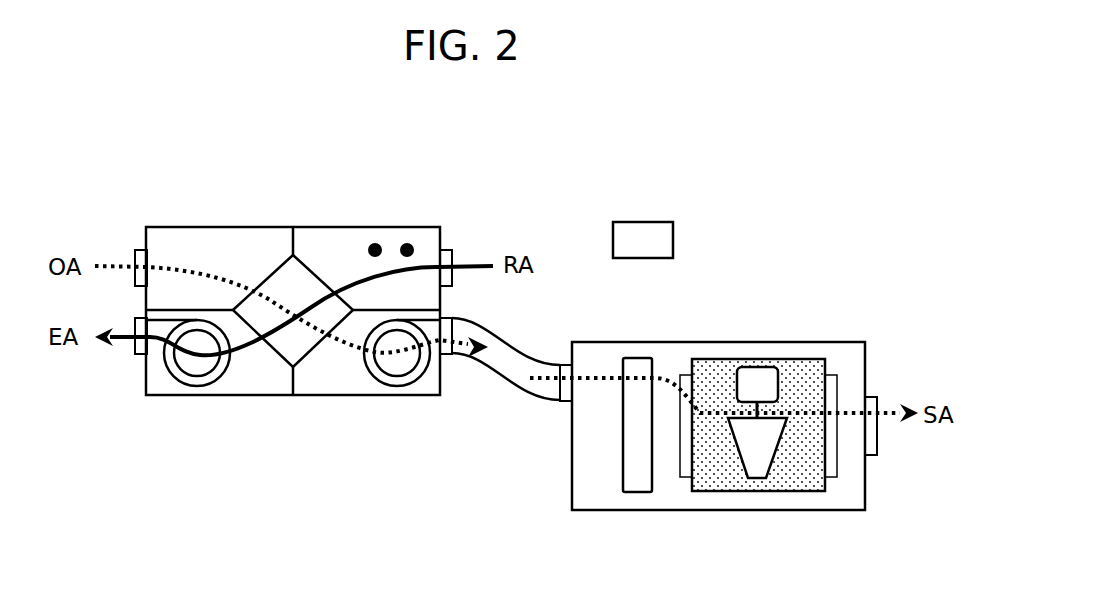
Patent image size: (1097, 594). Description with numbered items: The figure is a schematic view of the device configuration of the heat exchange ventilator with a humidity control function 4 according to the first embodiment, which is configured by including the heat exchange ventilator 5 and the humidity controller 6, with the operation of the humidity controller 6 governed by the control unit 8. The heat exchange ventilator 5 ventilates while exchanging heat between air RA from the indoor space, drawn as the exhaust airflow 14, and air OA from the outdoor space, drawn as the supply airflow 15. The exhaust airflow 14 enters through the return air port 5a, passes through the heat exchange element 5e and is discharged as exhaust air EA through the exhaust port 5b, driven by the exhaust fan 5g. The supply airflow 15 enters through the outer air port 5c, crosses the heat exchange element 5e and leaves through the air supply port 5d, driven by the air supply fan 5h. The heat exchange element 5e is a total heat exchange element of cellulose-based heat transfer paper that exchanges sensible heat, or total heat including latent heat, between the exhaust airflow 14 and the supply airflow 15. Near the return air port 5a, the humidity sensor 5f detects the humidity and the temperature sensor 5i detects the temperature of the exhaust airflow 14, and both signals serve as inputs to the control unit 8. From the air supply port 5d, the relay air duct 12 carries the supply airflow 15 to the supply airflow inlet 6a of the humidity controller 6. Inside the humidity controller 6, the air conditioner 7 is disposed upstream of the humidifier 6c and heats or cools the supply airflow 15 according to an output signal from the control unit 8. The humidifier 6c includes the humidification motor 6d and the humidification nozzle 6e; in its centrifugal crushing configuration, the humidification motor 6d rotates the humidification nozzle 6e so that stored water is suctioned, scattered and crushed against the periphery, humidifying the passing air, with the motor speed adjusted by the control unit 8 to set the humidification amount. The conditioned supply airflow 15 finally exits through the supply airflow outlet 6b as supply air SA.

The heat exchange ventilator with a humidity control function 4 is at (679, 169).
The heat exchange ventilator 5 is at (180, 227).
The return air port 5a is at (450, 250).
The exhaust port 5b is at (141, 355).
The outer air port 5c is at (140, 250).
The air supply port 5d is at (450, 355).
The heat exchange element 5e is at (300, 262).
The humidity sensor 5f is at (376, 244).
The exhaust fan 5g is at (190, 370).
The air supply fan 5h is at (397, 370).
The temperature sensor 5i is at (408, 244).
The humidity controller 6 is at (838, 342).
The supply airflow inlet 6a is at (566, 365).
The supply airflow outlet 6b is at (880, 397).
The humidifier 6c is at (728, 362).
The humidification motor 6d is at (762, 377).
The humidification nozzle 6e is at (757, 460).
The air conditioner 7 is at (637, 480).
The control unit 8 is at (628, 222).
The relay air duct 12 is at (512, 372).
The exhaust airflow 14 is at (252, 362).
The supply airflow 15 is at (235, 272).